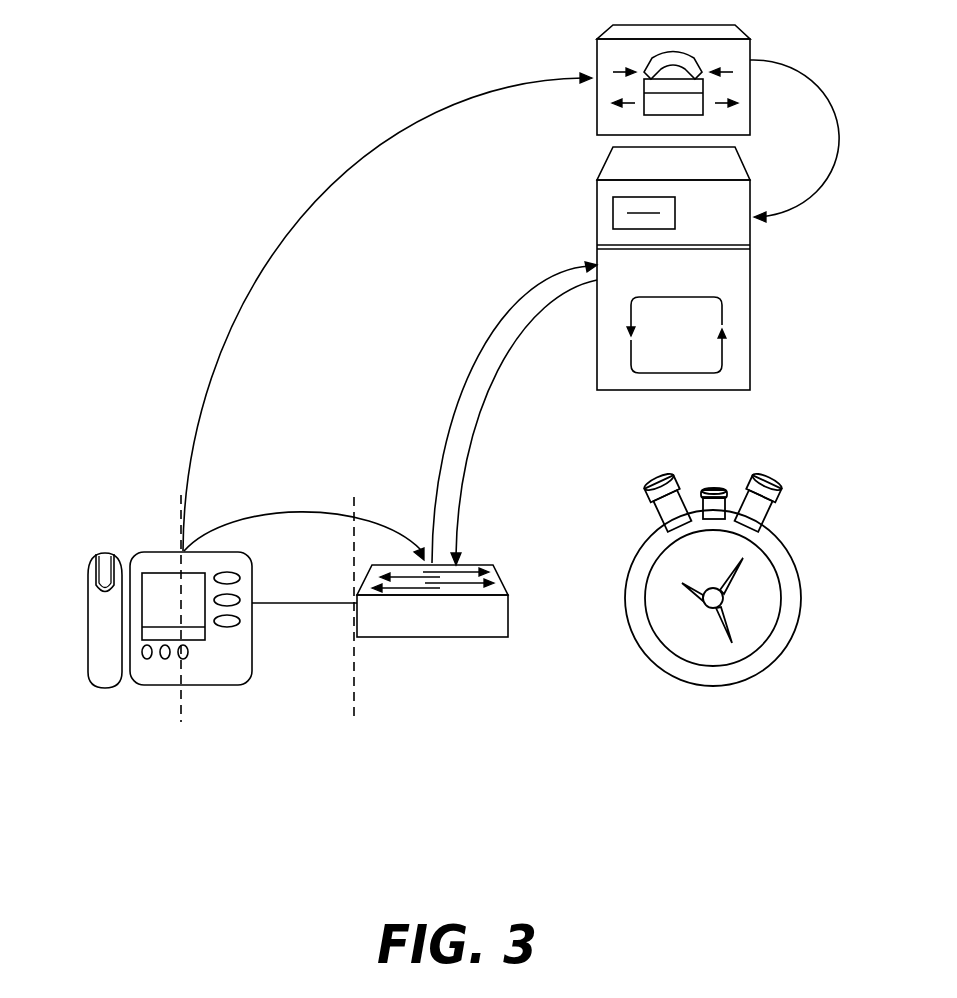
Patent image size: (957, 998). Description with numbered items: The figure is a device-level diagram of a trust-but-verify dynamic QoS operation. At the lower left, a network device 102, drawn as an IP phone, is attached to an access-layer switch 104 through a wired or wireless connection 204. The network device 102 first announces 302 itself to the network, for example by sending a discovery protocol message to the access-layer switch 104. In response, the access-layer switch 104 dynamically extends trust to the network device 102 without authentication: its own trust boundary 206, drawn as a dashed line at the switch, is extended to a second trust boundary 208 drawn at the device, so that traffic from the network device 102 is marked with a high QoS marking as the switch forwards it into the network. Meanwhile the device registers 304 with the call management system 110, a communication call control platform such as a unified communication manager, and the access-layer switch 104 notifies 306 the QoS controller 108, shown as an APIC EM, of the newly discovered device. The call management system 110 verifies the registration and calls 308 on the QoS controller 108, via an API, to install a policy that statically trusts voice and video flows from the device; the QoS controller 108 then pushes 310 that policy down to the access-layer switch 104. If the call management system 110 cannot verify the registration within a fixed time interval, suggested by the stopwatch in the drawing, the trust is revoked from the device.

The network device 102 is at (88, 590).
The access-layer switch 104 is at (508, 590).
The QoS controller 108 is at (750, 318).
The call management system 110 is at (750, 43).
The wired or wireless connection 204 is at (327, 603).
The trust boundary 206 is at (352, 556).
The trust boundary 208 is at (181, 552).
The announcement 302 is at (330, 510).
The registration 304 is at (257, 276).
The notification 306 is at (460, 397).
The policy call 308 is at (835, 126).
The policy installation 310 is at (485, 397).